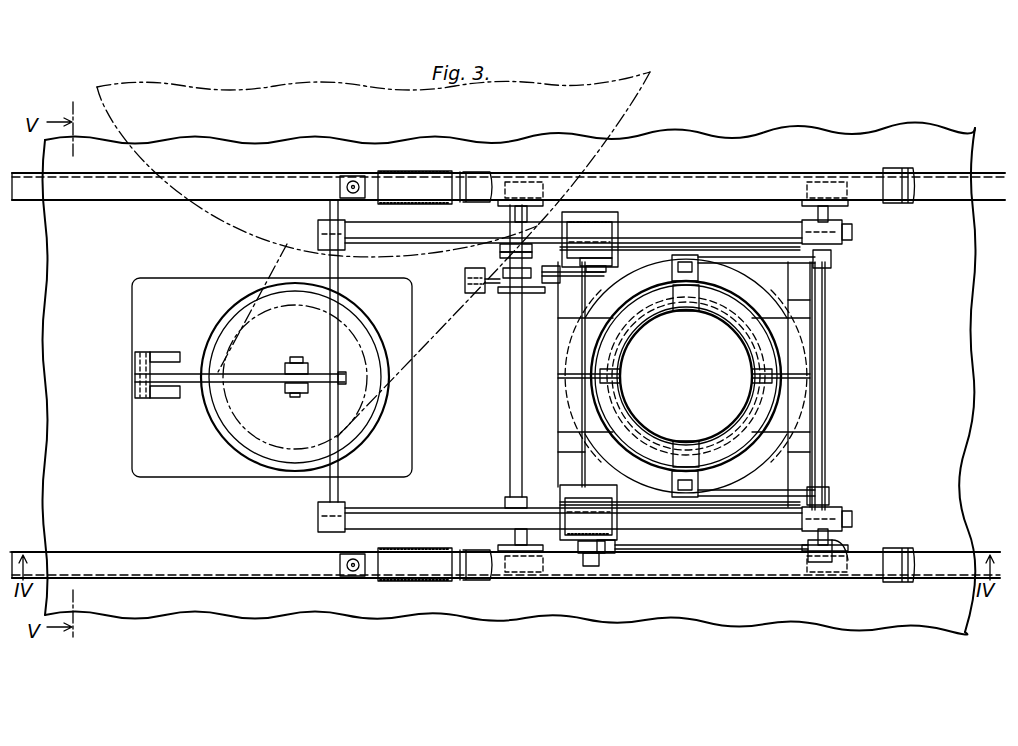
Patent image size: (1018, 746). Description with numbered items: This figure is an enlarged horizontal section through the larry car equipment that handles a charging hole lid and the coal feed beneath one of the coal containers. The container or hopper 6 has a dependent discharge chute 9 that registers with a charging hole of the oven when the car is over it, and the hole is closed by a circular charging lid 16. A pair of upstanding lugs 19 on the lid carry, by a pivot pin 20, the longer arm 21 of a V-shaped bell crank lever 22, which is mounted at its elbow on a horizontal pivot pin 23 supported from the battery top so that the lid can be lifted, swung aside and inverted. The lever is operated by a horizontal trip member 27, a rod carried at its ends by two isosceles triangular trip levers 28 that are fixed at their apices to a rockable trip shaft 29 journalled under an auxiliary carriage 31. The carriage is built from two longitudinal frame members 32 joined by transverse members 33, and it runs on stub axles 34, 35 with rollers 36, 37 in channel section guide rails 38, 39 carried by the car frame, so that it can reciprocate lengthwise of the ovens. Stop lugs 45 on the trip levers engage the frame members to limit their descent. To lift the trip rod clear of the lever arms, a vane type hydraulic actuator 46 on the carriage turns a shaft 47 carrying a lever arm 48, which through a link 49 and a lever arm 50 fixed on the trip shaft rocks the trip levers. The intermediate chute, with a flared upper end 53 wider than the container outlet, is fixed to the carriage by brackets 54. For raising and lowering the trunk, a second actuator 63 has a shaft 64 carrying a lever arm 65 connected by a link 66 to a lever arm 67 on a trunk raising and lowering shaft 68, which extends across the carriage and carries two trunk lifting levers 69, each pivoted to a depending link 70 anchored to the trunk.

The container or hopper 6 is at (276, 82).
The discharge chute 9 is at (223, 392).
The charging lid 16 is at (238, 433).
The upstanding lugs 19 is at (287, 372).
The pivot pin 20 is at (297, 397).
The arm of bell crank lever 21 is at (265, 384).
The bell crank lever 22 is at (126, 395).
The pivot pin 23 is at (140, 360).
The trip member 27 is at (330, 307).
The trip levers 28 is at (345, 252).
The trip shaft 29 is at (515, 347).
The auxiliary carriage 31 is at (539, 498).
The longitudinal frame members 32 is at (667, 240).
The transverse members 33 is at (570, 477).
The stub axle 34 is at (528, 210).
The stub axle 35 is at (824, 210).
The roller 36 is at (512, 194).
The roller 37 is at (805, 188).
The guide member or rail 38 is at (950, 570).
The guide member or rail 39 is at (957, 192).
The stop lugs 45 is at (318, 232).
The vane type hydraulic actuator 46 is at (603, 235).
The shaft 47 is at (610, 255).
The lever arm 48 is at (570, 287).
The link 49 is at (500, 293).
The lever arm 50 is at (467, 276).
The flared upper end 53 is at (782, 345).
The brackets 54 is at (567, 372).
The actuator 63 is at (573, 522).
The shaft 64 is at (598, 548).
The lever arm 65 is at (588, 555).
The link 66 is at (748, 550).
The lever arm 67 is at (820, 558).
The trunk raising and lowering shaft 68 is at (816, 452).
The trunk lifting levers 69 is at (722, 258).
The depending link 70 is at (685, 258).